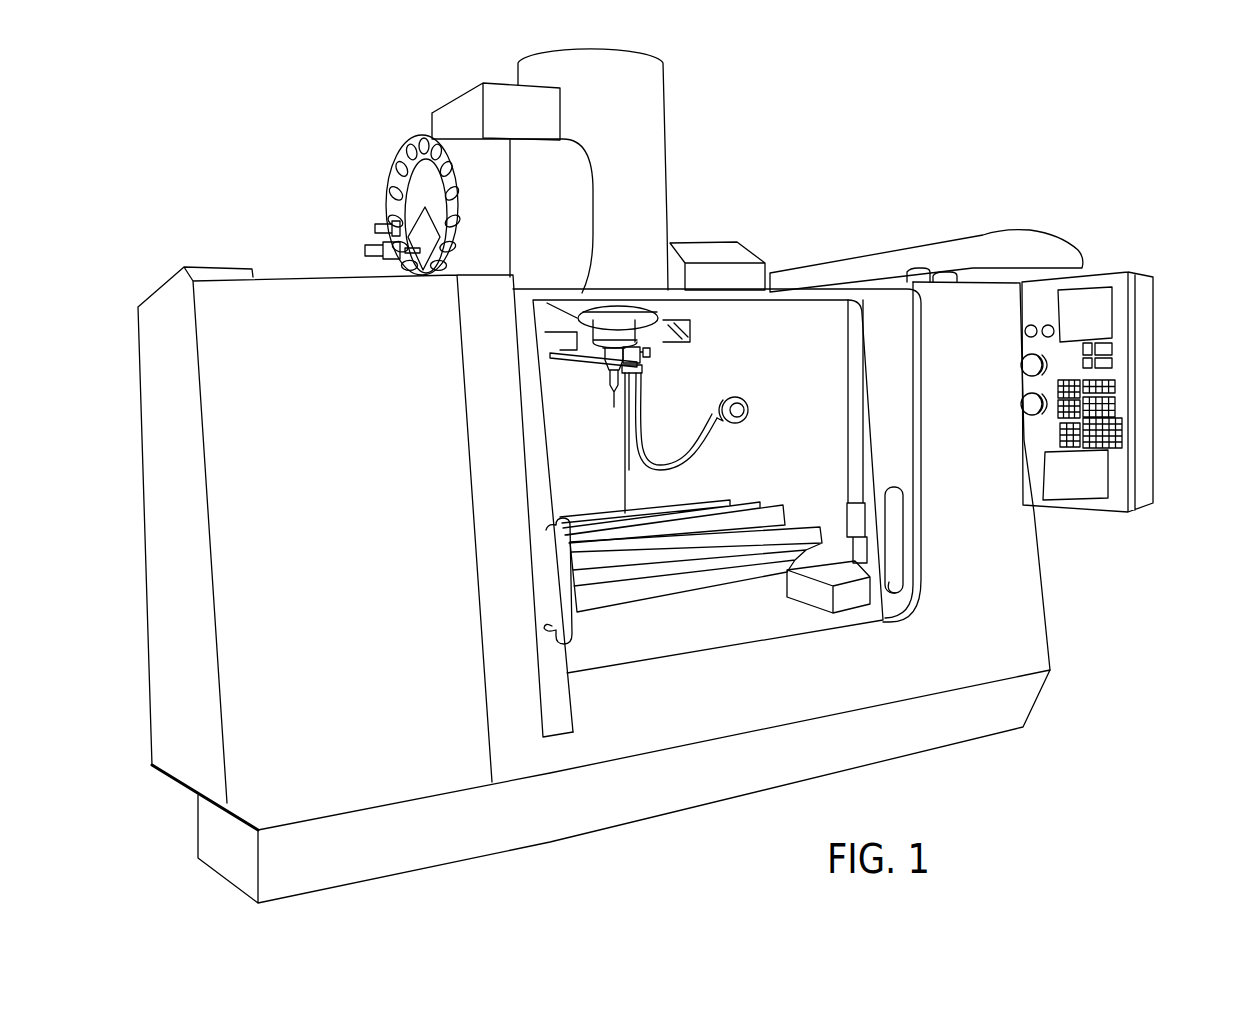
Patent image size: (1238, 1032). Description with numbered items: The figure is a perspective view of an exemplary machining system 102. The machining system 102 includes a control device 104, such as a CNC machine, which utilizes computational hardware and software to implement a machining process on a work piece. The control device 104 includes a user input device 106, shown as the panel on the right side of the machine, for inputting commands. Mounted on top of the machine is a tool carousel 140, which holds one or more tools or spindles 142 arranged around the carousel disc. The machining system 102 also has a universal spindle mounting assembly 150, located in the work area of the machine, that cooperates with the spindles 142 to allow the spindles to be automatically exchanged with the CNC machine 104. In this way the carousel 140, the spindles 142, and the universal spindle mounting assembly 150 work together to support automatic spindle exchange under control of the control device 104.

The machining system 102 is at (693, 148).
The control device 104 is at (650, 99).
The user input device 106 is at (1132, 245).
The tool carousel 140 is at (572, 189).
The spindles 142 is at (393, 135).
The universal spindle mounting assembly 150 is at (660, 352).